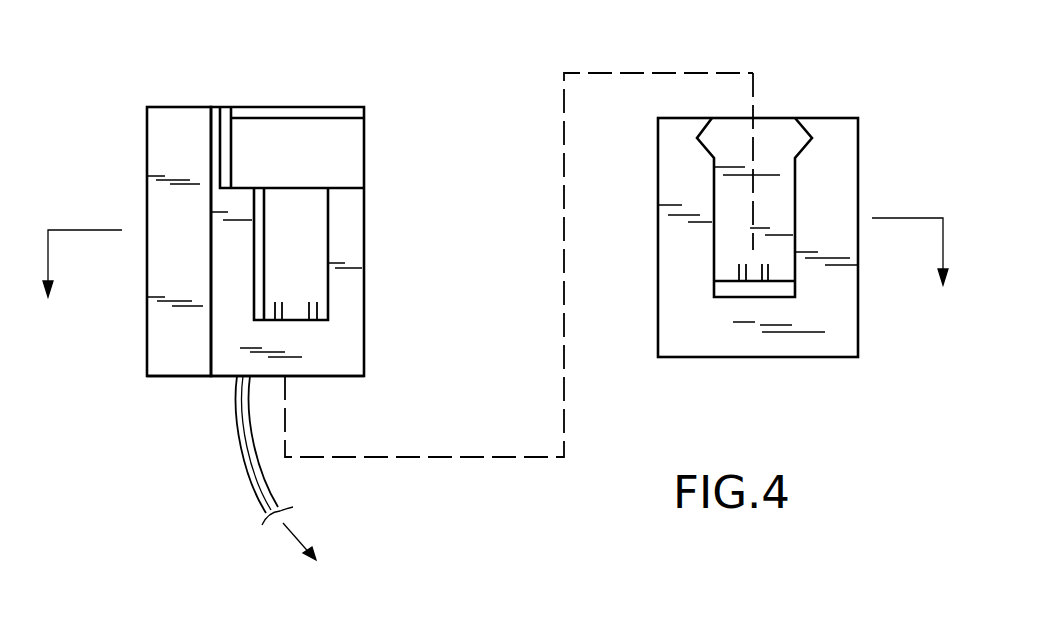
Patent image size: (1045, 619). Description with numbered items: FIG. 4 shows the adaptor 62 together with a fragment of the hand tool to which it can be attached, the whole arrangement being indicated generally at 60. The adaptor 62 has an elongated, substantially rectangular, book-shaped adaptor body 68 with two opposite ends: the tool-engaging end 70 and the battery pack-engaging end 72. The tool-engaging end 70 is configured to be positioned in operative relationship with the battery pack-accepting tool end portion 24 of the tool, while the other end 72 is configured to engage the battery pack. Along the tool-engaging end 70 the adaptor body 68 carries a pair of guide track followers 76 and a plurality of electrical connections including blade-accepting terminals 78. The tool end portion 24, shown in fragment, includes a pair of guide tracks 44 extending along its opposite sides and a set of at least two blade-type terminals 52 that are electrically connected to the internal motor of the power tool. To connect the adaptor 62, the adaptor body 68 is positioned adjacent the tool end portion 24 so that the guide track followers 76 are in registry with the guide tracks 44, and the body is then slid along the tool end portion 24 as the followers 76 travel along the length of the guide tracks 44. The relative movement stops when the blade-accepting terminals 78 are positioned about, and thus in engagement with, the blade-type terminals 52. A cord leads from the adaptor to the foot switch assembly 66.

The connector assembly 60 is at (108, 64).
The adaptor 62 is at (218, 107).
The adaptor body 68 is at (196, 378).
The tool-engaging end 70 is at (338, 355).
The battery pack-engaging end 72 is at (147, 334).
The guide track followers 76 is at (254, 240).
The blade-accepting terminals 78 is at (278, 320).
The guide tracks 44 is at (716, 208).
The tool end portion 24 is at (858, 142).
The blade-type terminals 52 is at (765, 282).
The foot switch assembly 66 is at (447, 487).